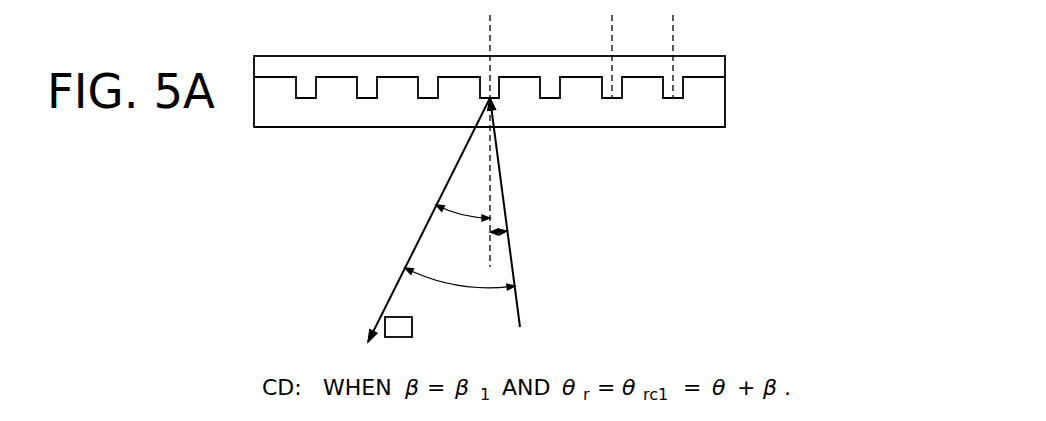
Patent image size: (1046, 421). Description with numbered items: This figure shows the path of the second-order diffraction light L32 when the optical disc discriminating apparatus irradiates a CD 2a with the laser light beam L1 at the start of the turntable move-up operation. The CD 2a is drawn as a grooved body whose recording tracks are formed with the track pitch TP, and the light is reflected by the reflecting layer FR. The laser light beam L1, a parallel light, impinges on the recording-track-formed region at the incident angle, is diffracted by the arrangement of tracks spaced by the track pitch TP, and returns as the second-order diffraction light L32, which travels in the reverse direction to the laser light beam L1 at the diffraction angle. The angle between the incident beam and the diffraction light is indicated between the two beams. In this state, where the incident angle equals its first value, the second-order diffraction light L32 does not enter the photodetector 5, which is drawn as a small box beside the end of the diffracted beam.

The reflecting layer FR is at (712, 78).
The CD 2a is at (622, 128).
The track pitch TP is at (672, 35).
The laser light beam L1 is at (500, 170).
The second-order diffraction light from CD L32 is at (412, 255).
The photodetector 5 is at (414, 328).